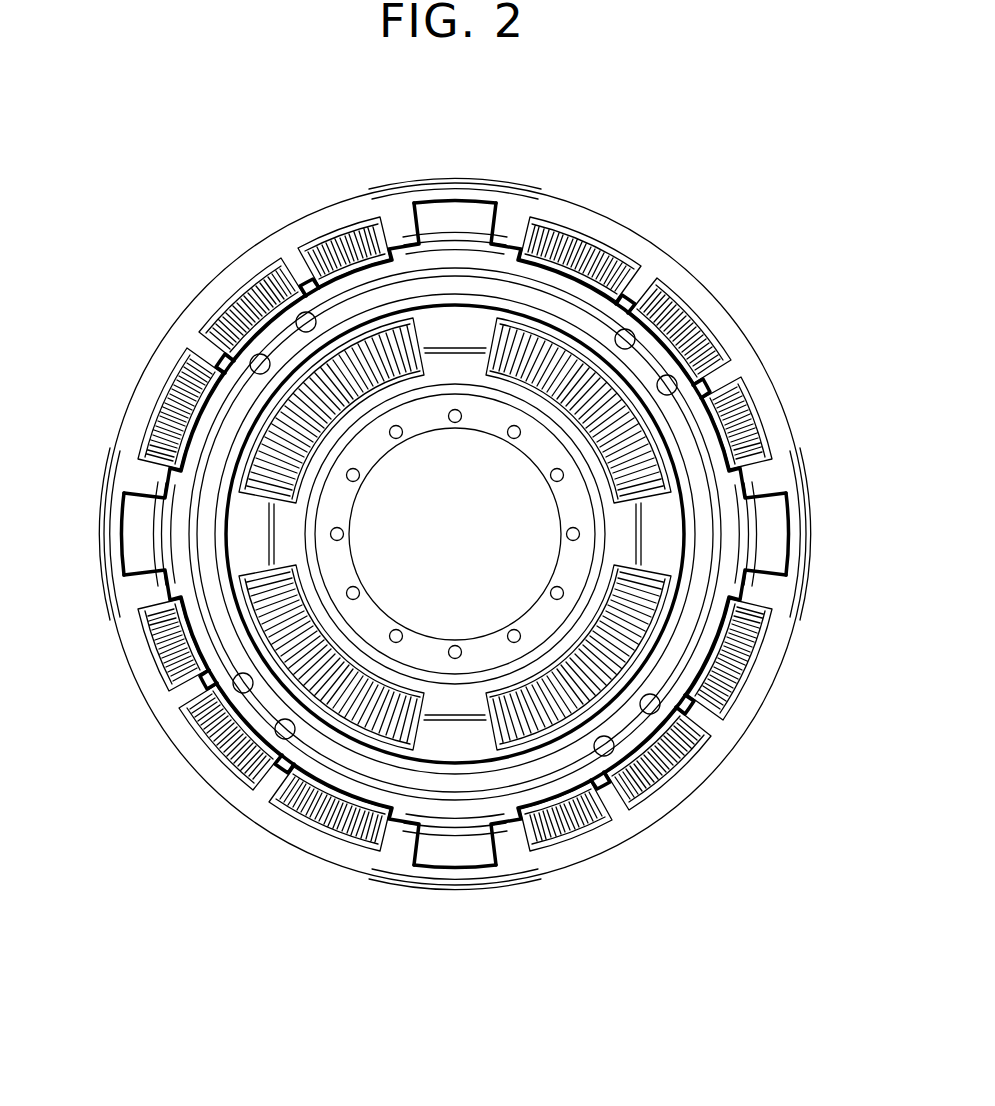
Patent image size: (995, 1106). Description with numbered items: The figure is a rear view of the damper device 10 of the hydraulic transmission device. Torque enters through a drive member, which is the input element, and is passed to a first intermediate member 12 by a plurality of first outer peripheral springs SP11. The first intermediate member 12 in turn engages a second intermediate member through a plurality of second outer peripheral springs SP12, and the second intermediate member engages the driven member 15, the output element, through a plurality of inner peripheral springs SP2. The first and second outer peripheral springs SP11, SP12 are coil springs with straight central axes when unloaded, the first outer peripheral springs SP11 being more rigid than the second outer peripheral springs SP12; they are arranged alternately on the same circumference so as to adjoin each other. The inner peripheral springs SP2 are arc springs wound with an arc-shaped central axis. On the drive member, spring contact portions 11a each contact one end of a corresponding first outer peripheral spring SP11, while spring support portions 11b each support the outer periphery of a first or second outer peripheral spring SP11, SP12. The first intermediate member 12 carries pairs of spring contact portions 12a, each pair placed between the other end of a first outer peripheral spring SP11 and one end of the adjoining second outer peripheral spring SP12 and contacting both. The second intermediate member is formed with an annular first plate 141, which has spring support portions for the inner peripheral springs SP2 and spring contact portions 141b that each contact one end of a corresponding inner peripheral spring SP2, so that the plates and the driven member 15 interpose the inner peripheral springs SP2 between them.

The damper device 10 is at (752, 242).
The spring contact portion 11a is at (462, 215).
The spring support portion 11b is at (240, 362).
The first intermediate member 12 is at (195, 790).
The spring contact portion 12a is at (718, 358).
The first plate 141 is at (300, 550).
The spring contact portion 141b is at (240, 523).
The driven member 15 is at (432, 428).
The first outer peripheral spring SP11 is at (360, 237).
The second outer peripheral spring SP12 is at (618, 252).
The inner peripheral spring SP2 is at (500, 700).